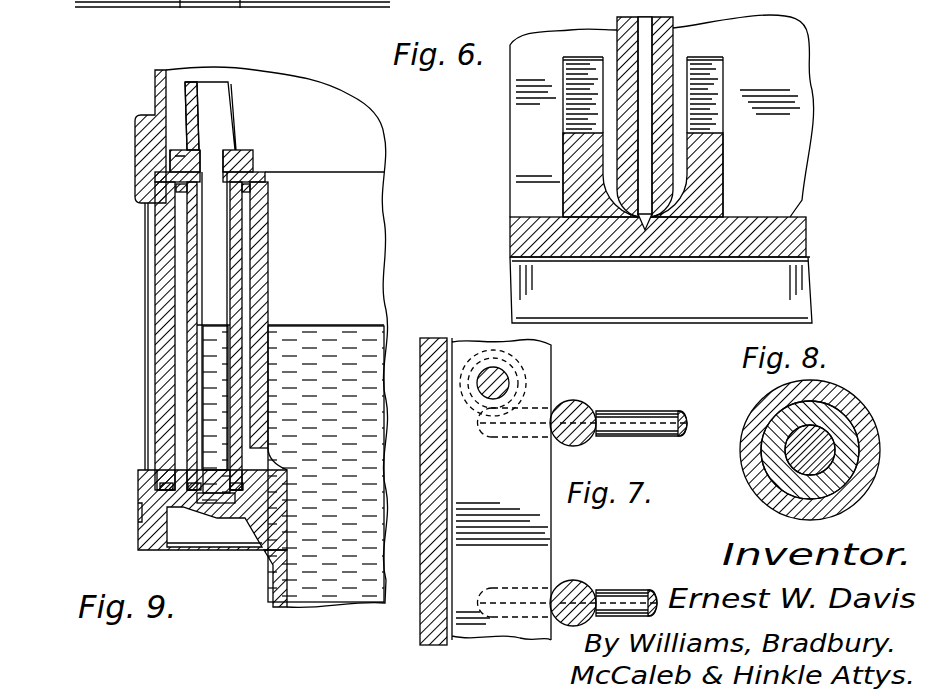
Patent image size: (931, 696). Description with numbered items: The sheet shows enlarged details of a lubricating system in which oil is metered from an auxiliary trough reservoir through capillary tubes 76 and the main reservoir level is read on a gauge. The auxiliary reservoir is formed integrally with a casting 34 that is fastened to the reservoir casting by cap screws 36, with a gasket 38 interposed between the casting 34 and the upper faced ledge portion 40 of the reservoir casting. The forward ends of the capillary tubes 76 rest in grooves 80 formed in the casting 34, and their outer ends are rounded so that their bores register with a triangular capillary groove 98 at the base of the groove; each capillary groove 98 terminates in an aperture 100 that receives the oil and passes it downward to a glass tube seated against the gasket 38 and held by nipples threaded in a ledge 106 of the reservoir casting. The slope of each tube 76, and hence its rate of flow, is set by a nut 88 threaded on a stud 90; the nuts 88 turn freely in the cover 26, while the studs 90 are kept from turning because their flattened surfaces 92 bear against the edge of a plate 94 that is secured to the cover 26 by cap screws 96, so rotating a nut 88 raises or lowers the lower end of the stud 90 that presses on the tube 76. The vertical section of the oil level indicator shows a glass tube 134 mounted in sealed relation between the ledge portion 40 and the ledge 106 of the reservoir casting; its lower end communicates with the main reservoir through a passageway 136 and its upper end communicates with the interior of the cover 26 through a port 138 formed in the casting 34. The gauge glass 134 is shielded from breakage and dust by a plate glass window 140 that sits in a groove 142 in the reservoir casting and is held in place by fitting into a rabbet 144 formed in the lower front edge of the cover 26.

In FIG. 9, the cover 26 is at (147, 137).
In FIG. 7, the cover 26 is at (430, 585).
In FIG. 8, the cover 26 is at (745, 453).
In FIG. 9, the casting 34 is at (220, 104).
In FIG. 6, the casting 34 is at (723, 205).
In FIG. 9, the cap screws 36 is at (232, 17).
In FIG. 9, the gasket 38 is at (183, 160).
In FIG. 9, the upper faced ledge portion 40 is at (265, 172).
In FIG. 6, the capillary tubes 76 is at (663, 83).
In FIG. 7, the capillary tubes 76 is at (650, 413).
In FIG. 6, the grooves 80 is at (676, 158).
In FIG. 8, the nuts 88 is at (840, 408).
In FIG. 7, the studs 90 is at (594, 404).
In FIG. 8, the studs 90 is at (830, 441).
In FIG. 7, the flattened surfaces 92 is at (550, 402).
In FIG. 8, the flattened surfaces 92 is at (758, 460).
In FIG. 7, the plate 94 is at (552, 550).
In FIG. 7, the cap screws 96 is at (492, 368).
In FIG. 6, the capillary groove 98 is at (647, 230).
In FIG. 6, the aperture 100 is at (628, 128).
In FIG. 9, the ledge 106 is at (285, 462).
In FIG. 9, the glass tube 134 is at (235, 297).
In FIG. 9, the passageway 136 is at (290, 530).
In FIG. 9, the port 138 is at (213, 158).
In FIG. 9, the plate glass window 140 is at (163, 310).
In FIG. 9, the groove 142 is at (137, 472).
In FIG. 9, the rabbet 144 is at (150, 186).